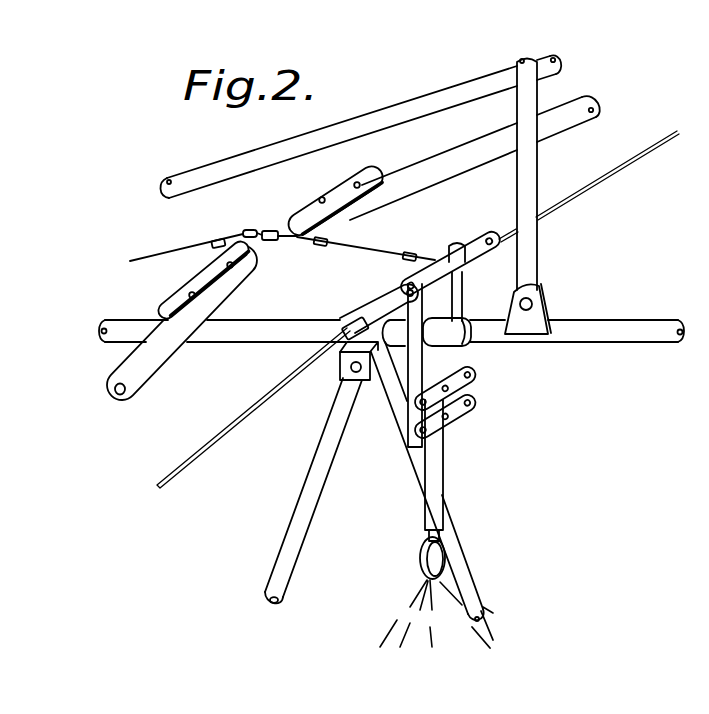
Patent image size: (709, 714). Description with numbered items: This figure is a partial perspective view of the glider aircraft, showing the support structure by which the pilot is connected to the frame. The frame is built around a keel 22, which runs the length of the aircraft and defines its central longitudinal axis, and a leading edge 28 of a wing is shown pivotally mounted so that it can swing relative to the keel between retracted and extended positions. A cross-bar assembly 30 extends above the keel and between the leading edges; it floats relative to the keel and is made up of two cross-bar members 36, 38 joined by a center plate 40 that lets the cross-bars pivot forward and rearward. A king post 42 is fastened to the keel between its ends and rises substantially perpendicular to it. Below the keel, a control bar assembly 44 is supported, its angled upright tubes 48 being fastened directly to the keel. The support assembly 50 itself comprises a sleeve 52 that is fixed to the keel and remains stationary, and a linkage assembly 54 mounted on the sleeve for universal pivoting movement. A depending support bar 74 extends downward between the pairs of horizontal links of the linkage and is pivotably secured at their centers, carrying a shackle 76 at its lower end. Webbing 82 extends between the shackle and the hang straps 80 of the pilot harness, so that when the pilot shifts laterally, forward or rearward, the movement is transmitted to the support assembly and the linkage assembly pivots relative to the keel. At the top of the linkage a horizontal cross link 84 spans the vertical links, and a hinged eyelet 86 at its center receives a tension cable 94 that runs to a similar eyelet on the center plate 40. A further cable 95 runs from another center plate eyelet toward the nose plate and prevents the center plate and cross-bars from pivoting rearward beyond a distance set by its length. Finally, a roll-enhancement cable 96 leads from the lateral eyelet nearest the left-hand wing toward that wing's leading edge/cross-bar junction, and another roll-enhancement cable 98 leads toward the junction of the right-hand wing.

The keel 22 is at (603, 327).
The leading edge 28 is at (423, 102).
The cross-bar assembly 30 is at (152, 398).
The cross-bar member 36 is at (150, 358).
The cross-bar member 38 is at (470, 150).
The center plate 40 is at (308, 210).
The king post 42 is at (535, 93).
The control bar assembly 44 is at (270, 552).
The upright tube 48 is at (295, 553).
The support assembly 50 is at (470, 318).
The sleeve 52 is at (458, 337).
The linkage assembly 54 is at (484, 410).
The depending support bar 74 is at (430, 480).
The shackle 76 is at (445, 527).
The hang straps 80 is at (513, 622).
The webbing 82 is at (421, 563).
The horizontal cross link 84 is at (453, 235).
The eyelet 86 is at (440, 255).
The tension cable 94 is at (363, 248).
The cable 95 is at (192, 245).
The roll-enhancement cable 96 is at (243, 415).
The roll-enhancement cable 98 is at (600, 182).